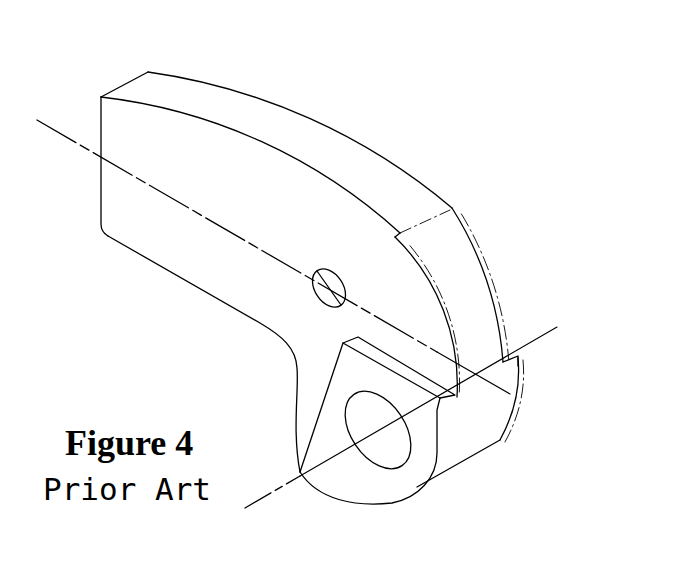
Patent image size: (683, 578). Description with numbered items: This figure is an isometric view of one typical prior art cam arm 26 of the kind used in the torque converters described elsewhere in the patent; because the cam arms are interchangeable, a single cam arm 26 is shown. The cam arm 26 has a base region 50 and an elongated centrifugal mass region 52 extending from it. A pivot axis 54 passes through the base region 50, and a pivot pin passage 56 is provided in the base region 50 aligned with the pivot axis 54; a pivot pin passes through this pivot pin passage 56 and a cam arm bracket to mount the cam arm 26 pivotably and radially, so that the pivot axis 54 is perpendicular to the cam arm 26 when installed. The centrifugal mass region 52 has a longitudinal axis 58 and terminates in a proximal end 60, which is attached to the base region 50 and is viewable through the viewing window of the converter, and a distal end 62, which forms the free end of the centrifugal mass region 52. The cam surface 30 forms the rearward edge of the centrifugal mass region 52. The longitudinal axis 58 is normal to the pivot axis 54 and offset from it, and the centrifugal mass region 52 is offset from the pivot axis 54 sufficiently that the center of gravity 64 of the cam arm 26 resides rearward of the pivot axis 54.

The cam arm 26 is at (318, 281).
The cam surface 30 is at (225, 110).
The base region 50 is at (510, 430).
The centrifugal mass region 52 is at (343, 135).
The pivot axis 54 is at (533, 343).
The pivot pin passage 56 is at (387, 453).
The longitudinal axis 58 is at (75, 145).
The proximal end 60 is at (462, 272).
The distal end 62 is at (115, 127).
The center of gravity 64 is at (315, 292).